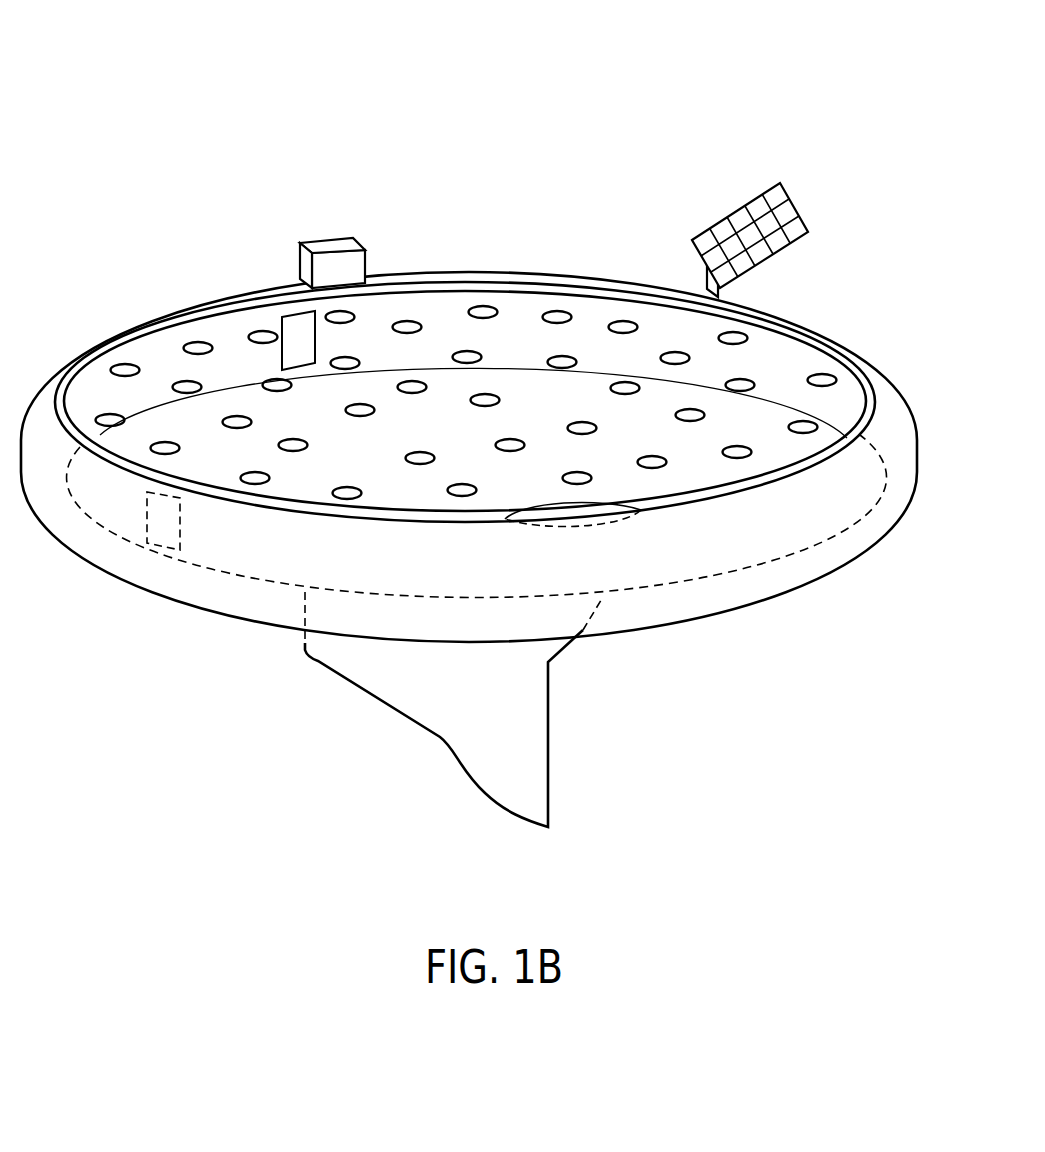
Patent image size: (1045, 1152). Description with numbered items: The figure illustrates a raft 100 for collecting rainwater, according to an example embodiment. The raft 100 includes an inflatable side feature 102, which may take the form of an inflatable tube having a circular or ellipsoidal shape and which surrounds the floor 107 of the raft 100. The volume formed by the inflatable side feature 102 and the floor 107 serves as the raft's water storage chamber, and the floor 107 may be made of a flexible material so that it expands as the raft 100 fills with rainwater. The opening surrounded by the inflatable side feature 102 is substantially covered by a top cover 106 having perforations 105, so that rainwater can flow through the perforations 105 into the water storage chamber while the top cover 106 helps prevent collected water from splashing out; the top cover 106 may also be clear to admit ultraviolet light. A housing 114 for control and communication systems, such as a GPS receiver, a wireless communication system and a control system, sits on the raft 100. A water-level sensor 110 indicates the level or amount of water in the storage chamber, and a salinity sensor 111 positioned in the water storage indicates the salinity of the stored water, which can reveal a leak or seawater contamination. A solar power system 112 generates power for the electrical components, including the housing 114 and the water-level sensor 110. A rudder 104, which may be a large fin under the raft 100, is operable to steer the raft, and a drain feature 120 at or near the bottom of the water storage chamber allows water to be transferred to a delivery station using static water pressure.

The raft 100 is at (478, 418).
The inflatable side feature 102 is at (905, 453).
The rudder 104 is at (382, 697).
The perforations 105 is at (617, 322).
The top cover 106 is at (527, 318).
The floor 107 is at (738, 543).
The water-level sensor 110 is at (163, 557).
The salinity sensor 111 is at (295, 328).
The solar power system 112 is at (735, 213).
The housing 114 is at (328, 247).
The drain feature 120 is at (623, 547).